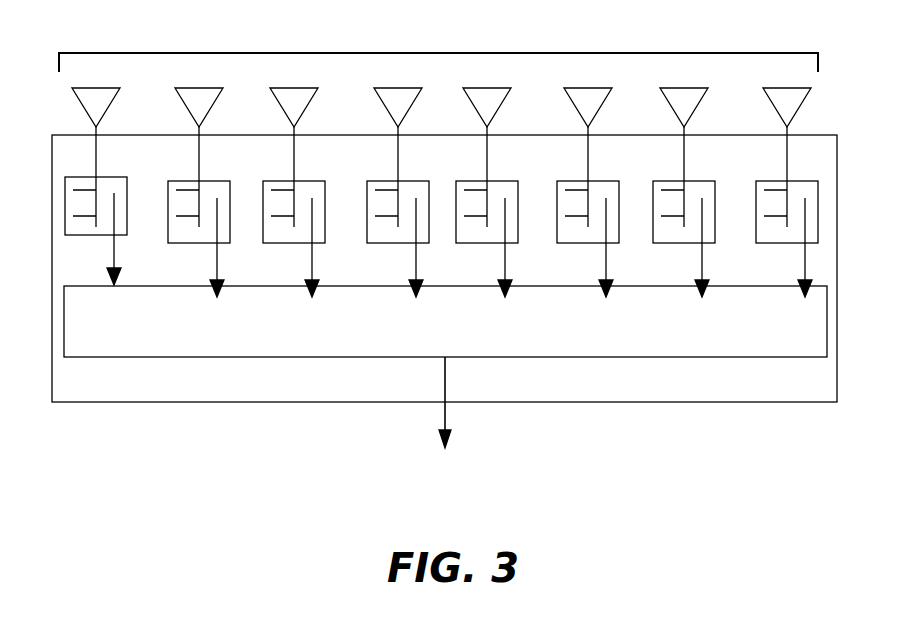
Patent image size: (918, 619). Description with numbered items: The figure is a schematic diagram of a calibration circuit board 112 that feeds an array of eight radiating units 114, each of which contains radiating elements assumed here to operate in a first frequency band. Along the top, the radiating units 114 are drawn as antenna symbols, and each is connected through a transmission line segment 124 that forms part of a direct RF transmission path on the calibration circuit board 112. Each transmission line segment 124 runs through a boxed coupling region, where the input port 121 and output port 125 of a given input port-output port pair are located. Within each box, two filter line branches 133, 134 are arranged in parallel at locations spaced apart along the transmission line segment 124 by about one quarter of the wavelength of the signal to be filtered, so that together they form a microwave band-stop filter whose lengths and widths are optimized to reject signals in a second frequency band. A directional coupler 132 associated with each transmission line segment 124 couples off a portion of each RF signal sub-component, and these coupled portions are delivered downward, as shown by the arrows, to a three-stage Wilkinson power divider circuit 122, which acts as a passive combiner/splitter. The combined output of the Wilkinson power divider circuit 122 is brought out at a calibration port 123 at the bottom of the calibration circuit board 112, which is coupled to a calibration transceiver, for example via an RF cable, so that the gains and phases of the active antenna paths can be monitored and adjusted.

The calibration circuit board 112 is at (444, 269).
The radiating unit 114 is at (438, 66).
The input port 121 is at (199, 224).
The Wilkinson power divider circuit 122 is at (445, 321).
The calibration port 123 is at (440, 441).
The transmission line segment 124 is at (196, 201).
The output port 125 is at (441, 198).
The directional coupler 132 is at (207, 202).
The filter line branch 133 is at (392, 216).
The filter line branch 134 is at (380, 189).